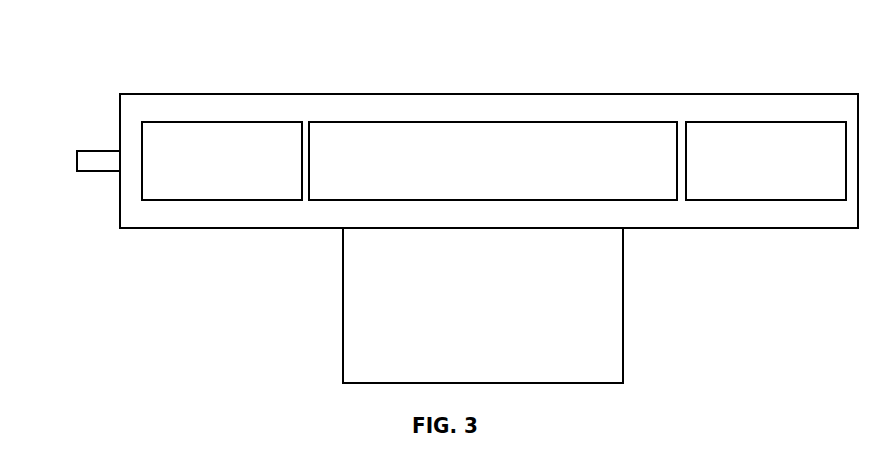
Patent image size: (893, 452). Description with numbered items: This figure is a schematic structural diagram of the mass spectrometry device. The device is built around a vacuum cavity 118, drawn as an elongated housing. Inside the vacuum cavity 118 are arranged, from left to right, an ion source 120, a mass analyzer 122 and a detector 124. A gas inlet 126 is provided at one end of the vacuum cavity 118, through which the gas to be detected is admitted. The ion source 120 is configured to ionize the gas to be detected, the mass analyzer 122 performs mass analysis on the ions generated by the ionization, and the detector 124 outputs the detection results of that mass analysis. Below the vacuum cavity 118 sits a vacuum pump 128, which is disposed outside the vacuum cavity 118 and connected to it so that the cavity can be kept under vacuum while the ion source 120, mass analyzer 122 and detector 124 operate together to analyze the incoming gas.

The vacuum cavity 118 is at (223, 228).
The ion source 120 is at (178, 142).
The mass analyzer 122 is at (470, 138).
The detector 124 is at (765, 147).
The gas inlet 126 is at (95, 163).
The vacuum pump 128 is at (552, 307).